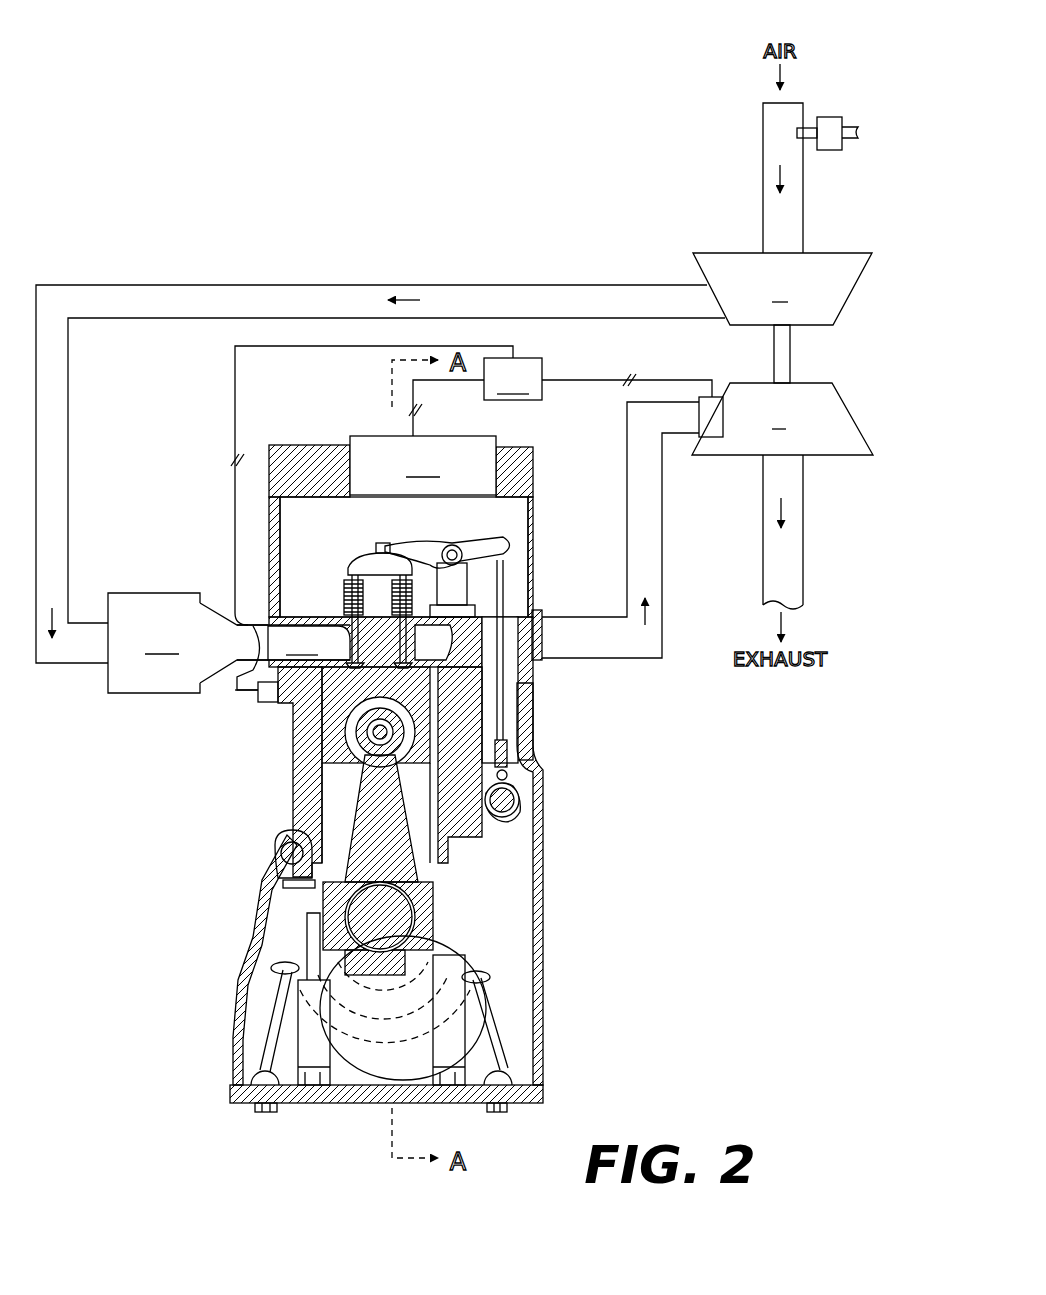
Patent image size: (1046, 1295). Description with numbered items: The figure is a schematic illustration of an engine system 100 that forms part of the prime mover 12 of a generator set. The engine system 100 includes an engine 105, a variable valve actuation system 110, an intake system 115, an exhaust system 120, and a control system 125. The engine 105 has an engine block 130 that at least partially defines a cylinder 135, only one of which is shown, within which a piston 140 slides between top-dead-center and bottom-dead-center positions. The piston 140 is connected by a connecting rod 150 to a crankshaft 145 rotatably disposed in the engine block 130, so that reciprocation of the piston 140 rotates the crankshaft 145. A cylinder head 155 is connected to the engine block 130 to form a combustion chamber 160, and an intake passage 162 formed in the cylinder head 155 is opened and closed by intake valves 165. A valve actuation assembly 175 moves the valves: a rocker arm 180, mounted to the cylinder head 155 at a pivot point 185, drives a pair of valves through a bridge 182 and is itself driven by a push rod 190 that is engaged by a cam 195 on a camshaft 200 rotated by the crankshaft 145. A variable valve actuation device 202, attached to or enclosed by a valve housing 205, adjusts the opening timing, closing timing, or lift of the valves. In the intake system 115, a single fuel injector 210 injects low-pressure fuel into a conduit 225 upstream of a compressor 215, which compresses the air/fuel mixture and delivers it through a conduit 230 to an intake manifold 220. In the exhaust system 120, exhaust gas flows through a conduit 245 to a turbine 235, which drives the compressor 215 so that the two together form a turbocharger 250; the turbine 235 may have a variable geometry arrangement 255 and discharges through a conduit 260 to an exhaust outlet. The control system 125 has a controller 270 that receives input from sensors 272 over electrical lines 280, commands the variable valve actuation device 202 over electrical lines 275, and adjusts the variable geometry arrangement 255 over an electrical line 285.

The prime mover 12 is at (105, 125).
The engine system 100 is at (278, 138).
The engine 105 is at (253, 818).
The variable valve actuation system 110 is at (355, 420).
The intake system 115 is at (636, 168).
The exhaust system 120 is at (686, 473).
The control system 125 is at (572, 362).
The engine block 130 is at (296, 766).
The cylinder 135 is at (318, 818).
The piston 140 is at (298, 756).
The crankshaft 145 is at (460, 970).
The connecting rod 150 is at (393, 842).
The cylinder head 155 is at (545, 662).
The combustion chamber 160 is at (424, 705).
The intake passage 162 is at (293, 642).
The intake valve 165 is at (390, 601).
The valve actuation assembly 175 is at (530, 534).
The rocker arm 180 is at (505, 540).
The bridge 182 is at (370, 562).
The pivot point 185 is at (452, 553).
The push rod 190 is at (506, 722).
The cam 195 is at (503, 814).
The camshaft 200 is at (505, 790).
The variable valve actuation device 202 is at (423, 465).
The valve housing 205 is at (300, 450).
The fuel injector 210 is at (833, 113).
The compressor 215 is at (743, 260).
The intake manifold 220 is at (188, 643).
The conduit 225 is at (785, 218).
The conduit 230 is at (505, 285).
The turbine 235 is at (838, 421).
The conduit 245 is at (645, 578).
The turbocharger 250 is at (805, 345).
The variable geometry arrangement 255 is at (717, 398).
The conduit 260 is at (790, 565).
The controller 270 is at (513, 379).
The sensor 272 is at (268, 703).
The electrical line 275 is at (456, 386).
The electrical line 280 is at (235, 447).
The electrical line 285 is at (660, 378).